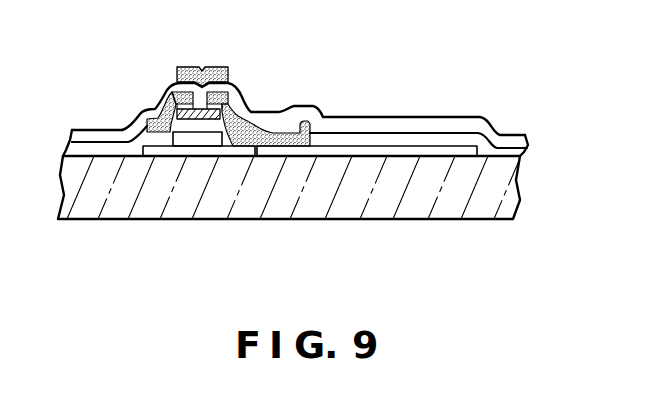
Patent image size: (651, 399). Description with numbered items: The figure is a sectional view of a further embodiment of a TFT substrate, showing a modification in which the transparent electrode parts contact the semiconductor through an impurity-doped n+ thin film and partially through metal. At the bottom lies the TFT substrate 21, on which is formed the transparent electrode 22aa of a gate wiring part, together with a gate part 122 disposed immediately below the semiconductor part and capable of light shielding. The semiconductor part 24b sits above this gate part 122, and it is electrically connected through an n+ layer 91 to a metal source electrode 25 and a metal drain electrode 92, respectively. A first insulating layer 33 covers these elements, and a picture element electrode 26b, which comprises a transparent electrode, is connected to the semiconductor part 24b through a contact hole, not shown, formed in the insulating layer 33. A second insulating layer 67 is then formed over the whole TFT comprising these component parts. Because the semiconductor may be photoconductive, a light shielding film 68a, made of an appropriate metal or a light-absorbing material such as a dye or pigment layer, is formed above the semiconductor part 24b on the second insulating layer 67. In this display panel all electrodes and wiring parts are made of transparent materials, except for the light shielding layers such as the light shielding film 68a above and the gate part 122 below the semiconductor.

The TFT substrate 21 is at (508, 188).
The transparent electrode of a gate wiring part 22aa is at (158, 150).
The semiconductor part 24b is at (190, 138).
The gate part 122 is at (216, 121).
The metal source electrode 25 is at (155, 107).
The first insulating layer 33 is at (93, 148).
The picture element electrode 26b is at (347, 150).
The second insulating layer 67 is at (462, 125).
The light shielding film 68a is at (197, 67).
The n+ layer 91 is at (233, 92).
The metal drain electrode 92 is at (278, 122).